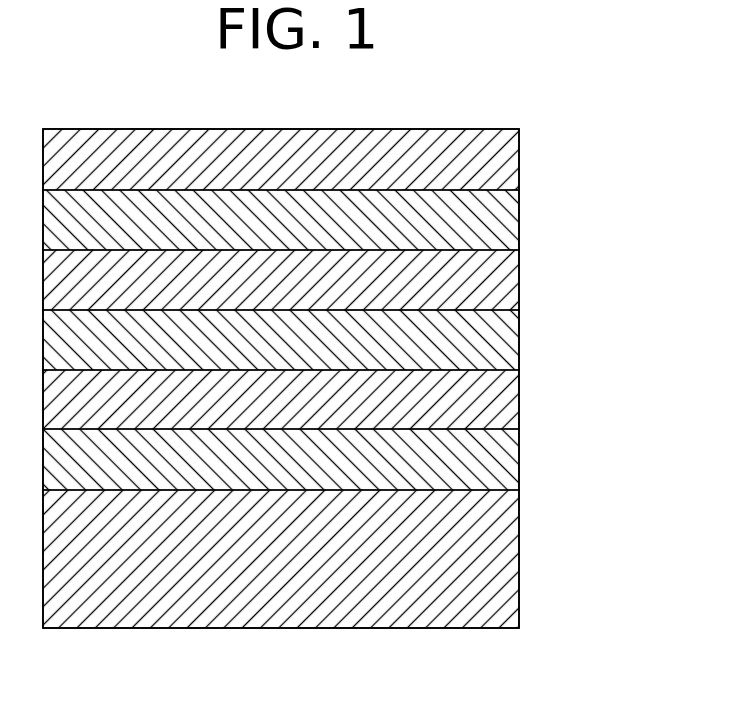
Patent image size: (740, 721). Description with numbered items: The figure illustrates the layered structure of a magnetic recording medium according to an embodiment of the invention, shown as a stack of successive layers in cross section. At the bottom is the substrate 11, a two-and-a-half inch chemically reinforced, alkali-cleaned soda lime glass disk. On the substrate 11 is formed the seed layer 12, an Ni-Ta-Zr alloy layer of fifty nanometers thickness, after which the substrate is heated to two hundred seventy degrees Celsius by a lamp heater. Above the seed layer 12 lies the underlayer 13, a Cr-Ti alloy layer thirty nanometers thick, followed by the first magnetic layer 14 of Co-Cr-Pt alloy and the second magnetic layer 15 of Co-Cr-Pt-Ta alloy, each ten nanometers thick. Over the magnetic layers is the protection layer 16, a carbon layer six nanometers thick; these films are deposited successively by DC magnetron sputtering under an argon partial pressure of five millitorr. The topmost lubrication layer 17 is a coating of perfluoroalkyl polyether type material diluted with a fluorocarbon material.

The substrate 11 is at (508, 563).
The seed layer 12 is at (508, 463).
The underlayer 13 is at (508, 403).
The first magnetic layer 14 is at (508, 343).
The second magnetic layer 15 is at (508, 283).
The protection layer 16 is at (508, 223).
The lubrication layer 17 is at (508, 162).